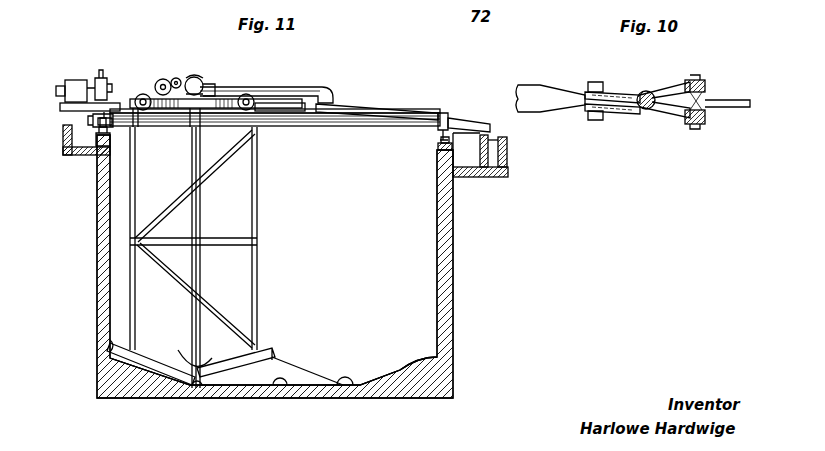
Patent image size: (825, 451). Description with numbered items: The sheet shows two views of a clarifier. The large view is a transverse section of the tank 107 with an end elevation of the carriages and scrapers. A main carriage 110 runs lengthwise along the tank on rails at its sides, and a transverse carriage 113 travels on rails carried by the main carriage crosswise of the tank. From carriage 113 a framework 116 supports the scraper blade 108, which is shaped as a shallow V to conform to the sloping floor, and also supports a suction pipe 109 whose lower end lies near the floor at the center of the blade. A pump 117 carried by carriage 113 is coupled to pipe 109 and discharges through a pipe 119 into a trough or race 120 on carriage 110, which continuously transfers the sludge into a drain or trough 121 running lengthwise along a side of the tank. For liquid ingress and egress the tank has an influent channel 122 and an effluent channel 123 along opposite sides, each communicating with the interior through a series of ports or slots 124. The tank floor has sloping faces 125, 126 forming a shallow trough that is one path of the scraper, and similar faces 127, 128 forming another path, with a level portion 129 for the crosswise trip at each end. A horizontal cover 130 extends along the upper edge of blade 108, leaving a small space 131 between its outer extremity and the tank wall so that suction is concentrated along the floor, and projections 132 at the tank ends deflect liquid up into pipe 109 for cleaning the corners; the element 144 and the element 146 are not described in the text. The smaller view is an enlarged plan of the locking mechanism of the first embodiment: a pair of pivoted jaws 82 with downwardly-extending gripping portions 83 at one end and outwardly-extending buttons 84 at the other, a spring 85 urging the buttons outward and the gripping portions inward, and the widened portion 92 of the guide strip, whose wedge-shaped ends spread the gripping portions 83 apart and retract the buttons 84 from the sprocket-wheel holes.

In FIG. 11, the motor 144 is at (65, 86).
In FIG. 11, the transverse carriage 113 is at (150, 92).
In FIG. 11, the roller 146 is at (165, 78).
In FIG. 11, the pump 117 is at (203, 78).
In FIG. 11, the pipe 119 is at (270, 87).
In FIG. 11, the trough or race 120 is at (375, 108).
In FIG. 11, the main carriage 110 is at (308, 126).
In FIG. 11, the ports or slots 124 is at (100, 162).
In FIG. 11, the drain or trough 121 is at (508, 133).
In FIG. 11, the effluent channel 123 is at (466, 162).
In FIG. 11, the influent channel 122 is at (72, 142).
In FIG. 11, the framework 116 is at (258, 215).
In FIG. 11, the suction pipe 109 is at (201, 270).
In FIG. 11, the tank 107 is at (437, 258).
In FIG. 11, the space 131 is at (108, 325).
In FIG. 11, the horizontal cover 130 is at (198, 358).
In FIG. 11, the scraper blade 108 is at (270, 345).
In FIG. 11, the face 127 is at (300, 362).
In FIG. 11, the face 128 is at (430, 356).
In FIG. 11, the face 125 is at (135, 393).
In FIG. 11, the projections 132 is at (347, 392).
In FIG. 11, the face 126 is at (265, 392).
In FIG. 11, the level portion 129 is at (283, 392).
In FIG. 10, the widened portion 92 is at (533, 86).
In FIG. 10, the gripping portions 83 is at (596, 82).
In FIG. 10, the pivoted jaws 82 is at (646, 91).
In FIG. 10, the buttons 84 is at (705, 82).
In FIG. 10, the spring 85 is at (708, 100).